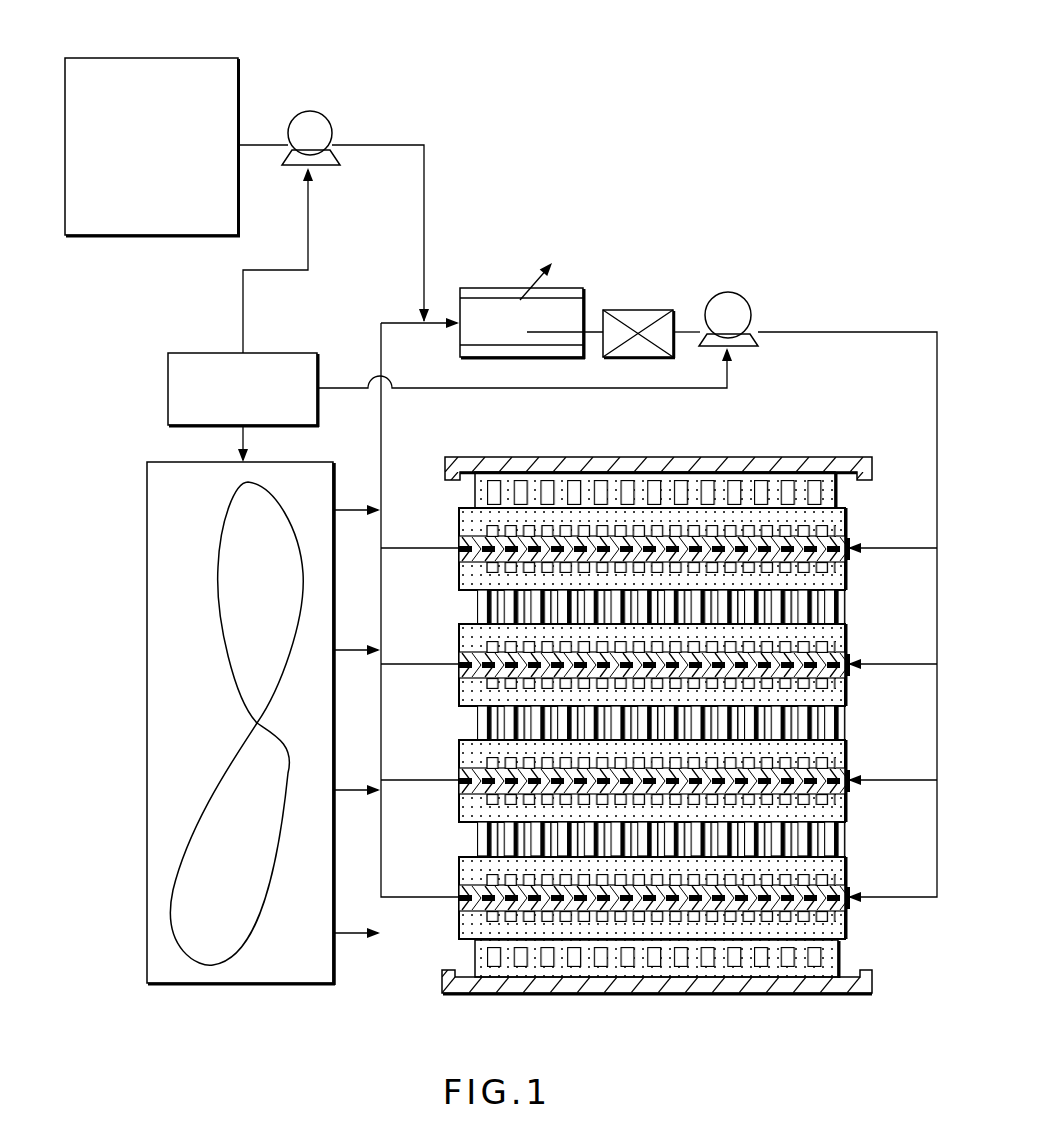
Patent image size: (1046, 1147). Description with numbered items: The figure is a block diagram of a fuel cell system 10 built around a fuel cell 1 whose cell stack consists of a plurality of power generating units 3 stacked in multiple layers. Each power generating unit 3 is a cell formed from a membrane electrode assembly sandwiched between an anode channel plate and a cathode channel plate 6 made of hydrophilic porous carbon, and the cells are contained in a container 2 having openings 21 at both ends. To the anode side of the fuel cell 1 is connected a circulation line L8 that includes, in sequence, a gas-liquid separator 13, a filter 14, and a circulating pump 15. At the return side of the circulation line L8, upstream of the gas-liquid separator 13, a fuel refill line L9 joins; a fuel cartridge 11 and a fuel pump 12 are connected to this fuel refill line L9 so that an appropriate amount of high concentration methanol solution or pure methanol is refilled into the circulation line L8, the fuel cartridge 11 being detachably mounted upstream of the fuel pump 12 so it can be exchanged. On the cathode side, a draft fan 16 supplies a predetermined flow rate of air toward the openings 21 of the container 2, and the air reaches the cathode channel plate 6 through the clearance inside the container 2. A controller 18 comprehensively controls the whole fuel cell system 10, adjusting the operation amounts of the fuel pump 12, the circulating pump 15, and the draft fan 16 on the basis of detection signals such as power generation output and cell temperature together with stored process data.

The fuel cell 1 is at (795, 403).
The container 2 is at (872, 466).
The power generating unit 3 is at (850, 520).
The cathode channel plate 6 is at (837, 488).
The fuel cell system 10 is at (494, 121).
The fuel cartridge 11 is at (195, 58).
The fuel pump 12 is at (310, 111).
The gas-liquid separator 13 is at (478, 288).
The filter 14 is at (657, 310).
The circulating pump 15 is at (727, 292).
The draft fan 16 is at (147, 520).
The controller 18 is at (168, 378).
The opening 21 is at (442, 917).
The circulation line L8 is at (937, 381).
The fuel refill line L9 is at (425, 200).